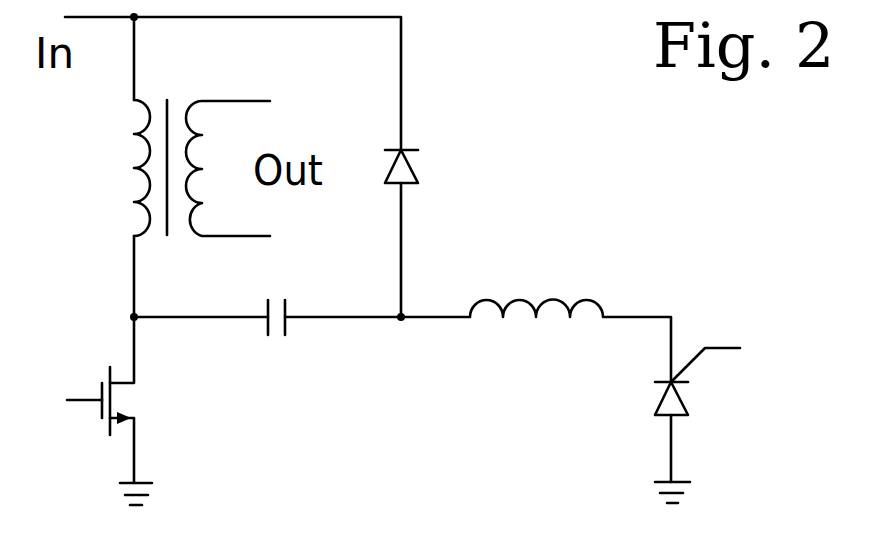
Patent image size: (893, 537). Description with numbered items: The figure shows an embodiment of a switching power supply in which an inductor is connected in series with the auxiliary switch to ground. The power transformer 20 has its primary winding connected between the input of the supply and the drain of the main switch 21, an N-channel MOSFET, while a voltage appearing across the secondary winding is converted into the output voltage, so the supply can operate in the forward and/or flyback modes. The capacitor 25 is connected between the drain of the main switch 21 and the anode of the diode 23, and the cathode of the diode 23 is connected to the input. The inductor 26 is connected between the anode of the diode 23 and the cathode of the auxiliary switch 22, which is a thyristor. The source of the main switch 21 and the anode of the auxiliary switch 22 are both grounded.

The power transformer 20 is at (167, 100).
The main switch 21 is at (110, 430).
The auxiliary switch 22 is at (660, 416).
The diode 23 is at (405, 184).
The capacitor 25 is at (287, 320).
The inductor 26 is at (587, 300).